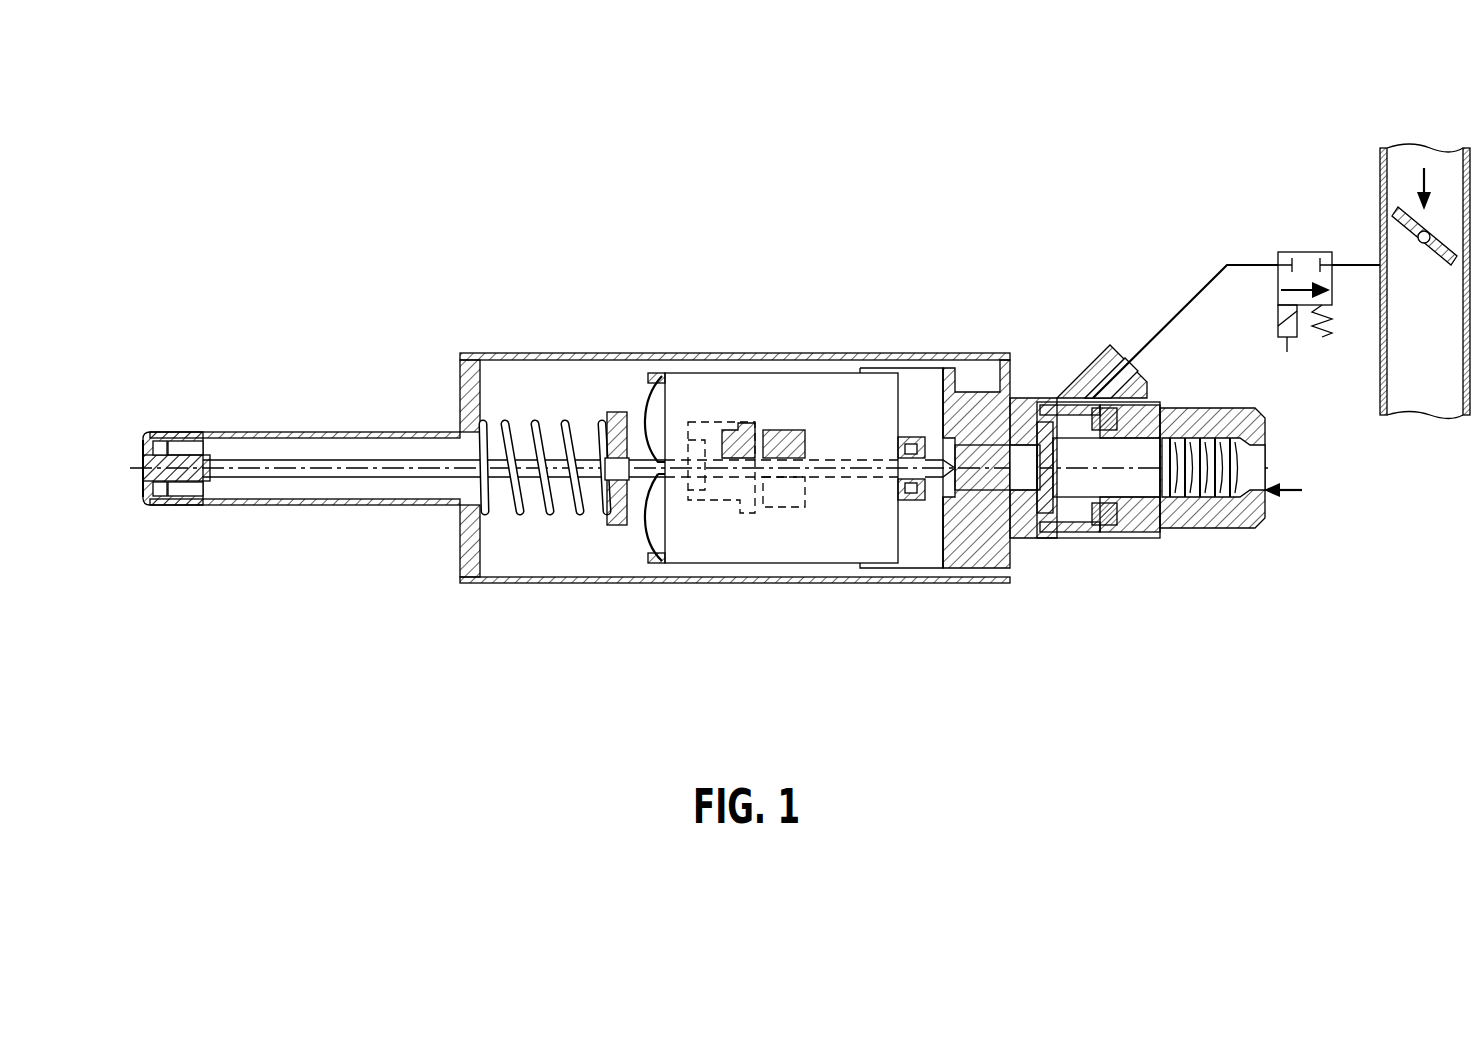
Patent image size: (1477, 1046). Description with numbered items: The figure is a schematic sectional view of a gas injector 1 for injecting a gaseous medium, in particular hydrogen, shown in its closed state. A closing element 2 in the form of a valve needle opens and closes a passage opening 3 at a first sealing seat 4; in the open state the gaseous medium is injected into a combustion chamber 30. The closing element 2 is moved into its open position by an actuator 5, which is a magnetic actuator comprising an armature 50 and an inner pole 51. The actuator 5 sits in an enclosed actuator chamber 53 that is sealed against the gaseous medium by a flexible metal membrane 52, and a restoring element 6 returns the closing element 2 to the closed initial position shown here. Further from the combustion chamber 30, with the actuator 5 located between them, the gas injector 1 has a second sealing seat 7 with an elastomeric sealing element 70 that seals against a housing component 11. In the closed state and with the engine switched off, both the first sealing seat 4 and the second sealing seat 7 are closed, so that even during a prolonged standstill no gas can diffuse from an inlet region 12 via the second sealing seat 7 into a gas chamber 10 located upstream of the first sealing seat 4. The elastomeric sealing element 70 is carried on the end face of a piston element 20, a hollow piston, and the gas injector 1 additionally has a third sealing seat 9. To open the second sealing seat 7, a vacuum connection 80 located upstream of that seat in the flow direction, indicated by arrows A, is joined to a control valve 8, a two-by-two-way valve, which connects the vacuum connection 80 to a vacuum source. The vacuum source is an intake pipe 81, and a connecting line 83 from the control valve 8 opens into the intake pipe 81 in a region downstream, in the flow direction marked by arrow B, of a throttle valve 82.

The gas injector 1 is at (330, 188).
The closing element 2 is at (292, 479).
The passage opening 3 is at (148, 505).
The first sealing seat 4 is at (160, 434).
The combustion chamber 30 is at (131, 431).
The actuator 5 is at (752, 396).
The armature 50 is at (803, 455).
The inner pole 51 is at (730, 445).
The flexible metal membrane 52 is at (648, 395).
The actuator chamber 53 is at (700, 400).
The restoring element 6 is at (540, 425).
The second sealing seat 7 is at (1043, 514).
The elastomeric sealing element 70 is at (1078, 537).
The control valve 8 is at (1303, 252).
The vacuum connection 80 is at (1100, 372).
The intake pipe 81 is at (1380, 190).
The throttle valve 82 is at (1405, 222).
The connecting line 83 is at (1348, 265).
The third sealing seat 9 is at (1125, 528).
The gas chamber 10 is at (508, 526).
The housing component 11 is at (1020, 410).
The inlet region 12 is at (1213, 531).
The piston element 20 is at (1015, 484).
The flow direction A is at (1283, 536).
The flow direction B is at (1445, 185).